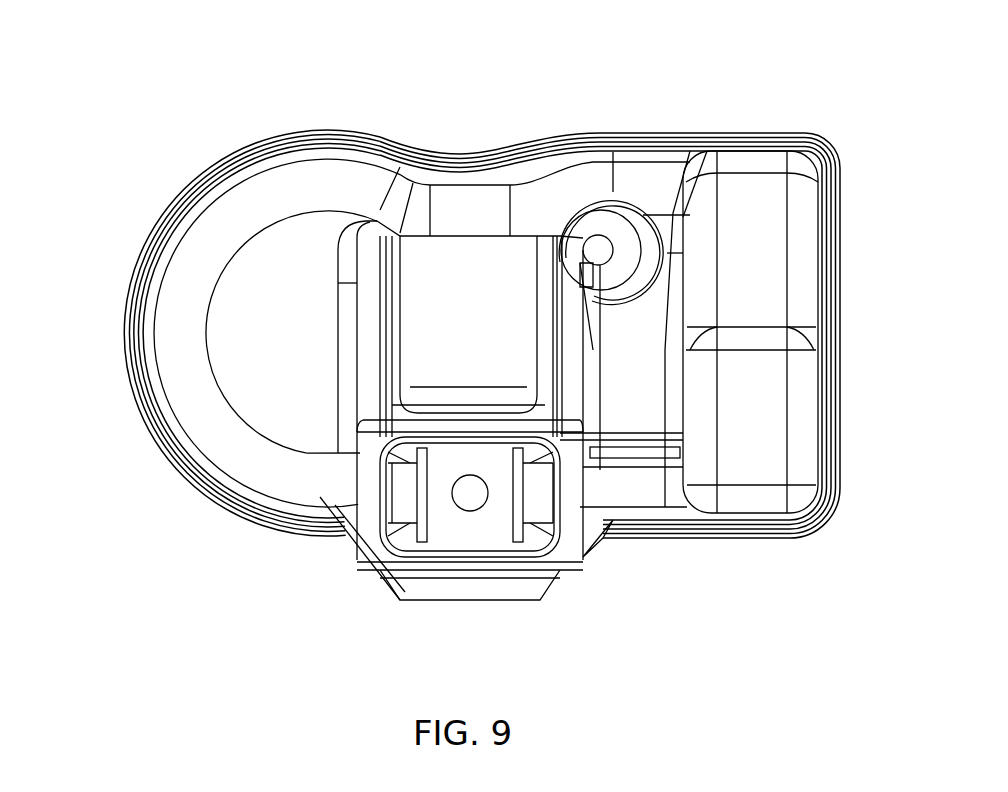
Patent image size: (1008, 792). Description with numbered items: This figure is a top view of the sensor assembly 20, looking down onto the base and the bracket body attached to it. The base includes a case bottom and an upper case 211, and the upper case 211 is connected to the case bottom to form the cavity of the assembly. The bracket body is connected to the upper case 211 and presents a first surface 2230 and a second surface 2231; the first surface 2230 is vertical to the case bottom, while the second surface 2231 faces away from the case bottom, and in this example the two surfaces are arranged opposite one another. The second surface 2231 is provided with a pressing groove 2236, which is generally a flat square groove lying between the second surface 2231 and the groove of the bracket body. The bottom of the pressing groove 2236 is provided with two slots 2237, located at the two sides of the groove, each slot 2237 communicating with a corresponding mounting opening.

The heating device body 20 is at (757, 63).
The upper case 211 is at (248, 343).
The first surface 2230 is at (469, 549).
The second surface 2231 is at (390, 563).
The pressing groove 2236 is at (480, 535).
The slots 2237 is at (530, 502).